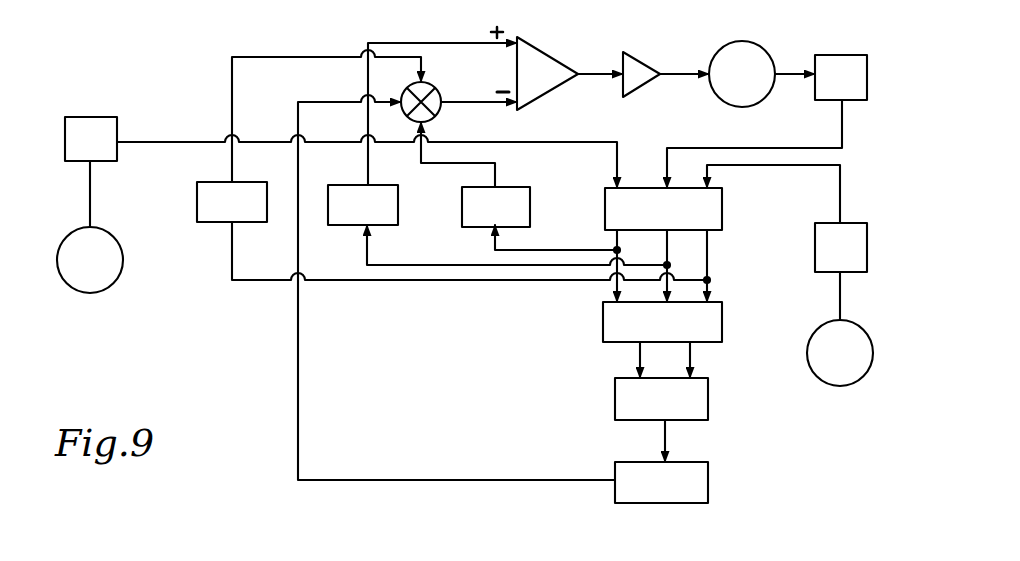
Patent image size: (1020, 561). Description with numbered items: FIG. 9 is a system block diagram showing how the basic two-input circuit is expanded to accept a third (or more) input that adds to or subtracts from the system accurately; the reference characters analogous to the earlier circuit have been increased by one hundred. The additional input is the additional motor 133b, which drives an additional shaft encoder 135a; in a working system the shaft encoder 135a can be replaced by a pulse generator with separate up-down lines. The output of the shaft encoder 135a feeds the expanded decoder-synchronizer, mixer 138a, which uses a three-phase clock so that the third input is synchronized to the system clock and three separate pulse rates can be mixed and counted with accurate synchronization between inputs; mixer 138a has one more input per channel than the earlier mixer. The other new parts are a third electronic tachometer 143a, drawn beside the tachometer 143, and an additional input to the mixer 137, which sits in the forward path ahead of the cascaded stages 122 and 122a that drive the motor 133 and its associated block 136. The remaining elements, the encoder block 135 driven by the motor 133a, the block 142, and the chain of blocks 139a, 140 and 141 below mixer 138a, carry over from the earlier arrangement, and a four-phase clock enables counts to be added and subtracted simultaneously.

The differential amplifier 122 is at (560, 37).
The power amplifier 122a is at (651, 38).
The motor 133 is at (775, 36).
The motor 133a is at (88, 293).
The additional motor 133b is at (836, 386).
The speed sensor 135 is at (84, 117).
The shaft encoder 135a is at (815, 223).
The sensor unit 136 is at (858, 55).
The mixer 137 is at (437, 88).
The mixer (expanded decoder-synchronizer) 138a is at (663, 209).
The logic circuit 139a is at (662, 322).
The control circuit 140 is at (661, 399).
The reset circuit 141 is at (661, 482).
The setting unit 142 is at (380, 225).
The electronic tachometer 143 is at (522, 187).
The third electronic tachometer 143a is at (215, 222).